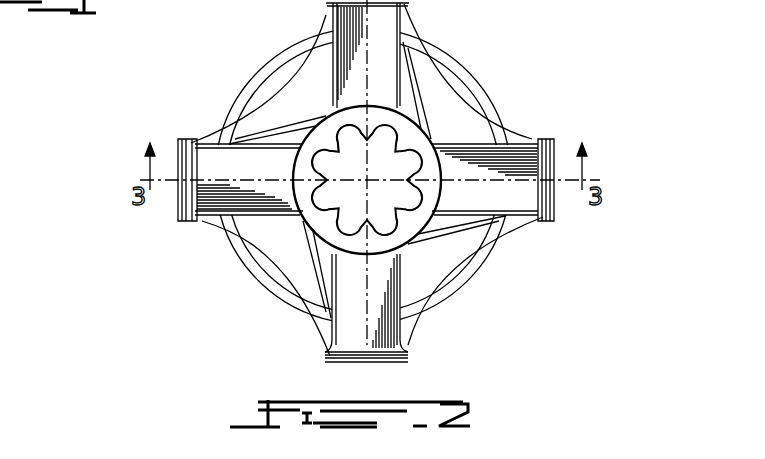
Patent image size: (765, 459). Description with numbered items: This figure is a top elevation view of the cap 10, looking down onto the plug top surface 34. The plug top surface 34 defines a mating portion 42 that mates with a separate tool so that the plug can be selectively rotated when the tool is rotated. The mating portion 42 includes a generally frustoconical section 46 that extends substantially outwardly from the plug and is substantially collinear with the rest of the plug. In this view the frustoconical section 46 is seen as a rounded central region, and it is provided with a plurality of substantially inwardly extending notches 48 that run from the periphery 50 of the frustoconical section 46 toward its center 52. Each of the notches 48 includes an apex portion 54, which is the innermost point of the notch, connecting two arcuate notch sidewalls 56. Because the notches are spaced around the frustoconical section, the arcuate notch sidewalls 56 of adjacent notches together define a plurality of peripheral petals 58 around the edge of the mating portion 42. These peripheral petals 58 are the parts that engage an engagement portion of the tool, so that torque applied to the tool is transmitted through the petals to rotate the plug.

The universal joint cross 10 is at (140, 116).
The plug top surface 34 is at (418, 116).
The mating portion 42 is at (394, 168).
The frustoconical section 46 is at (316, 236).
The notches 48 is at (371, 131).
The periphery 50 is at (336, 130).
The center 52 is at (340, 200).
The apex portion 54 is at (403, 222).
The arcuate notch sidewalls 56 is at (412, 208).
The peripheral petals 58 is at (410, 218).